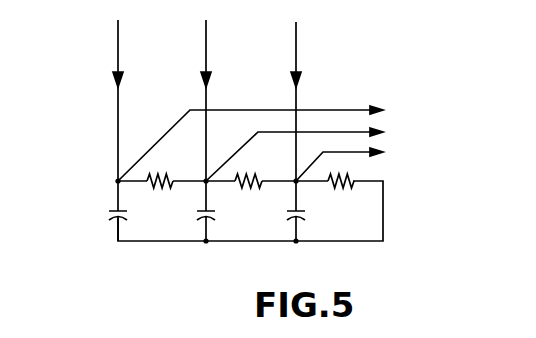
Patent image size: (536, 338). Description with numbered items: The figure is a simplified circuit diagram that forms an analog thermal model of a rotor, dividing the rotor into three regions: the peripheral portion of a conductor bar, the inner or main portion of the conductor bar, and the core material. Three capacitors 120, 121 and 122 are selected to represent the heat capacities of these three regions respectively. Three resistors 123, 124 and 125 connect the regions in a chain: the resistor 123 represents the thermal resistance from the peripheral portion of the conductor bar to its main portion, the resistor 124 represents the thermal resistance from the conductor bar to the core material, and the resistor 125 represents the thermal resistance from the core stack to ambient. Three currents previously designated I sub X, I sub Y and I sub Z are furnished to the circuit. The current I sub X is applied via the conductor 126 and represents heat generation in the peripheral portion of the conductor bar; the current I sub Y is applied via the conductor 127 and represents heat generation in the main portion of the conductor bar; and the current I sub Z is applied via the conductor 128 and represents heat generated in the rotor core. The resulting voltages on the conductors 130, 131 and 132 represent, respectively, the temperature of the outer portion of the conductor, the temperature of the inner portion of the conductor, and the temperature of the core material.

The capacitor 120 is at (115, 219).
The capacitor 121 is at (204, 220).
The capacitor 122 is at (294, 220).
The resistor 123 is at (161, 189).
The resistor 124 is at (250, 189).
The resistor 125 is at (347, 190).
The conductor 126 is at (118, 99).
The conductor 127 is at (206, 97).
The conductor 128 is at (296, 97).
The conductor 130 is at (386, 110).
The conductor 131 is at (386, 131).
The conductor 132 is at (386, 152).